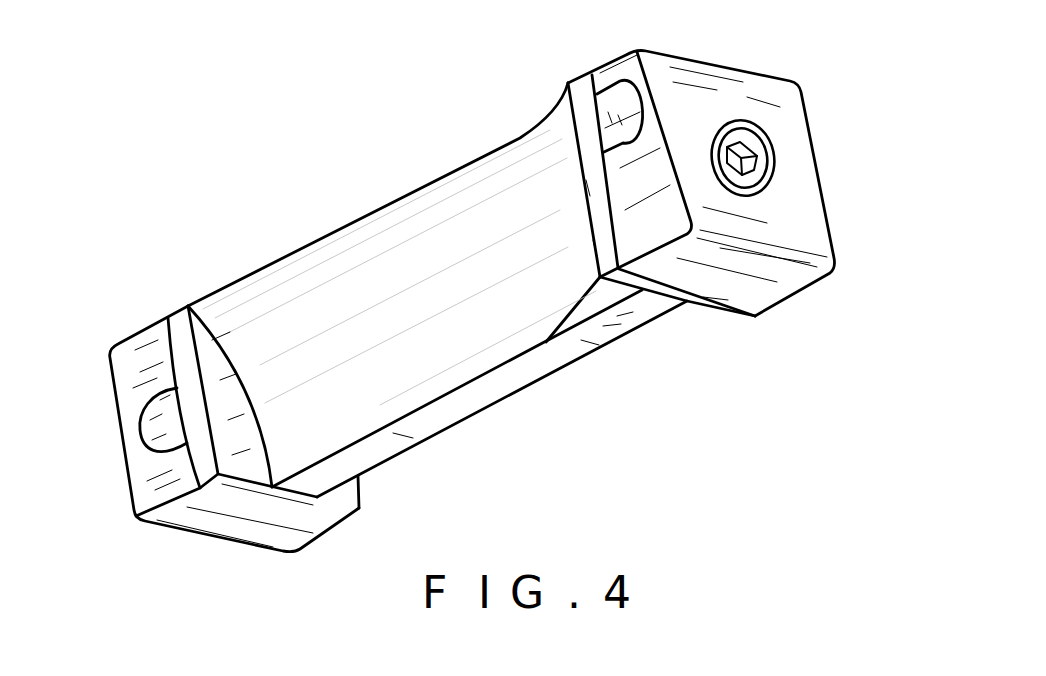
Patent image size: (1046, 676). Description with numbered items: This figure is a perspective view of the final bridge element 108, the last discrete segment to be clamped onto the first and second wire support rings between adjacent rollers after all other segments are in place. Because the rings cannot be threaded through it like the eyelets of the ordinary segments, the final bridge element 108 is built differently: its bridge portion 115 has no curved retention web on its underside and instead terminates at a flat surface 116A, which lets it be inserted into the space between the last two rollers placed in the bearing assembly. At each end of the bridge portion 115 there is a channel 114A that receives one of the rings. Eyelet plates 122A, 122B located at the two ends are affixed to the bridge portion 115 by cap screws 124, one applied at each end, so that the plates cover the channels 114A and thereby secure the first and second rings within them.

The final bridge element 108 is at (446, 282).
The bridge portion 115 is at (421, 181).
The flat surface 116A is at (482, 394).
The eyelet plate 122A is at (708, 101).
The eyelet plate 122B is at (143, 368).
The channel 114A is at (157, 423).
The cap screw 124 is at (755, 180).